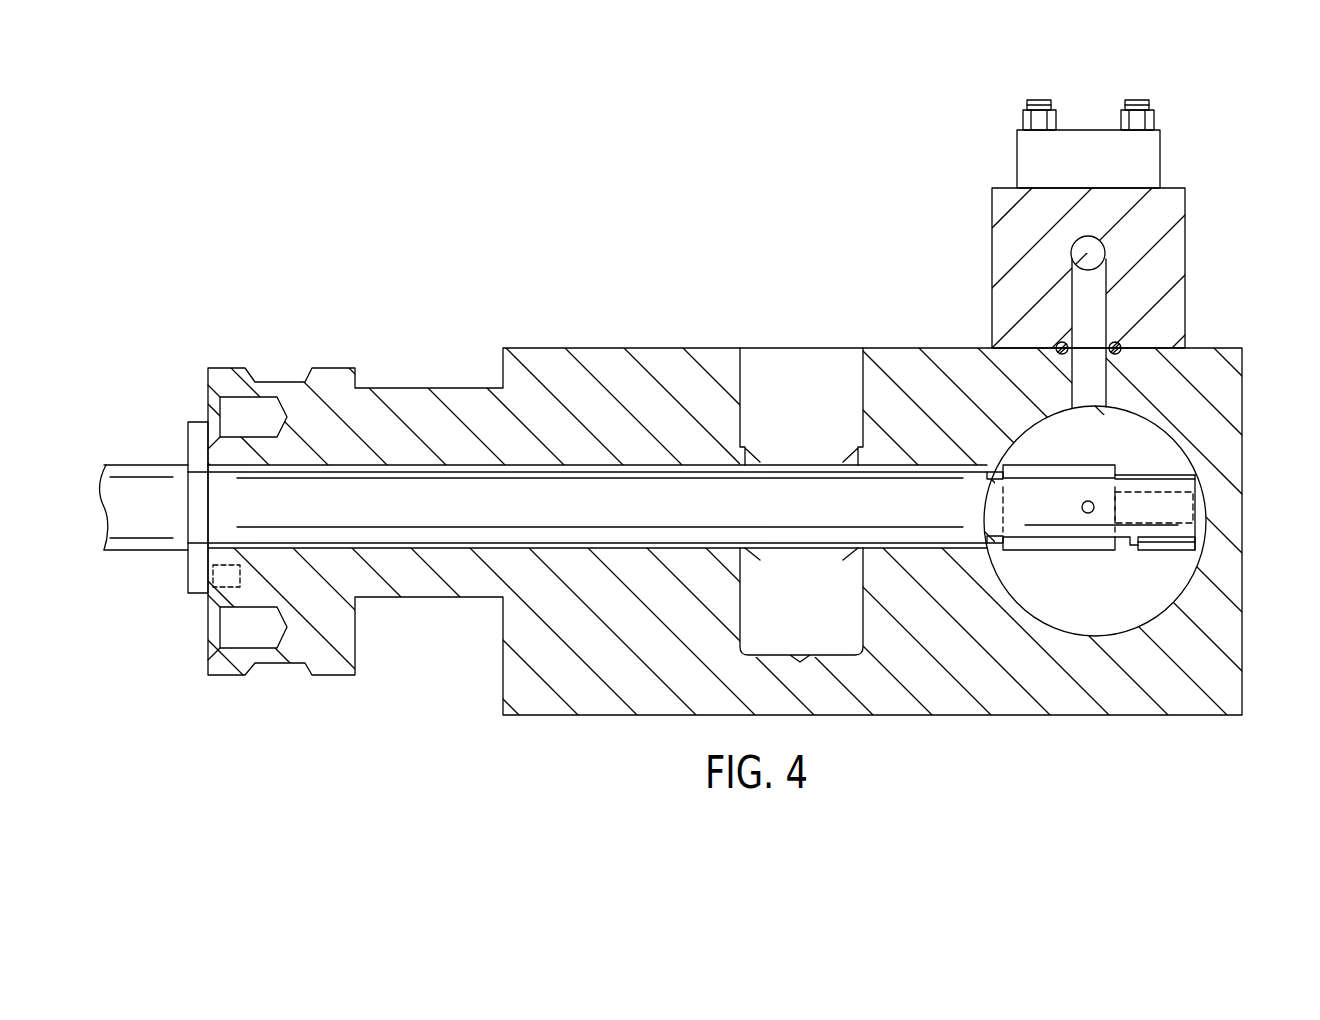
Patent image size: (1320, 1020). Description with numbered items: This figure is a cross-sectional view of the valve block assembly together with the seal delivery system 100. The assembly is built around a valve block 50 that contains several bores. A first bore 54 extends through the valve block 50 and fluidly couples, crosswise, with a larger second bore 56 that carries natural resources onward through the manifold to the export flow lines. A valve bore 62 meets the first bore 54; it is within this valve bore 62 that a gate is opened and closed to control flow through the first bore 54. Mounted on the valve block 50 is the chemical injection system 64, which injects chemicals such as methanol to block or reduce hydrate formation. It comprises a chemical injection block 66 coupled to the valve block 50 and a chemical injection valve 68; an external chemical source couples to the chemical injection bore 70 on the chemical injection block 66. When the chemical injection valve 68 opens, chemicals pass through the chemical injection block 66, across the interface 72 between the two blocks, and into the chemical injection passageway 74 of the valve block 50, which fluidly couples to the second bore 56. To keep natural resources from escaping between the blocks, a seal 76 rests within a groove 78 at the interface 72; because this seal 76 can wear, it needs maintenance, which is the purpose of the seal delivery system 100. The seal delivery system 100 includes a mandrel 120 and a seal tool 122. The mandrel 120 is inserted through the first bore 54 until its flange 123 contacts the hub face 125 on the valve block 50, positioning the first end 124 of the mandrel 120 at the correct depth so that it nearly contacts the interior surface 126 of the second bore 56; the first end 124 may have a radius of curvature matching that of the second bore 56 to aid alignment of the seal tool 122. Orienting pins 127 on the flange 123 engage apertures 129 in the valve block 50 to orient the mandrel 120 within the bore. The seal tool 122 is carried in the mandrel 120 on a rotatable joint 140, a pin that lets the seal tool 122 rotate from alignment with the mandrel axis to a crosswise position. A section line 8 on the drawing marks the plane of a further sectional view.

The section line 8- 8 is at (1088, 118).
The valve block 50 is at (606, 697).
The first bore 54 is at (443, 550).
The second bore 56 is at (1175, 575).
The valve bore 62 is at (778, 357).
The chemical injection system 64 is at (1066, 254).
The chemical injection block 66 is at (1178, 205).
The chemical injection valve 68 is at (1035, 165).
The chemical injection bore 70 is at (1083, 250).
The interface 72 is at (1158, 347).
The chemical injection passageway 74 is at (1093, 300).
The seal 76 is at (1115, 355).
The groove 78 is at (1057, 343).
The seal delivery system 100 is at (1047, 562).
The mandrel 120 is at (350, 512).
The seal tool 122 is at (1060, 465).
The flange 123 is at (188, 442).
The first end 124 is at (1203, 506).
The hub face 125 is at (208, 665).
The interior surface 126 is at (1192, 460).
The orienting pins 127 is at (218, 566).
The apertures 129 is at (222, 590).
The rotatable joint 140 is at (1082, 505).